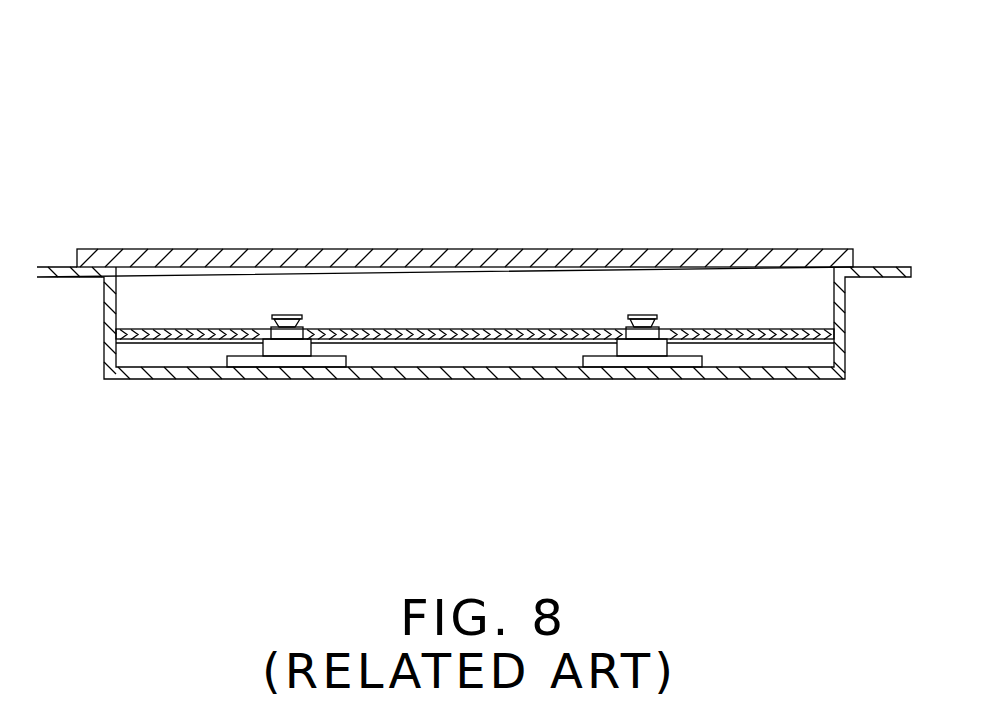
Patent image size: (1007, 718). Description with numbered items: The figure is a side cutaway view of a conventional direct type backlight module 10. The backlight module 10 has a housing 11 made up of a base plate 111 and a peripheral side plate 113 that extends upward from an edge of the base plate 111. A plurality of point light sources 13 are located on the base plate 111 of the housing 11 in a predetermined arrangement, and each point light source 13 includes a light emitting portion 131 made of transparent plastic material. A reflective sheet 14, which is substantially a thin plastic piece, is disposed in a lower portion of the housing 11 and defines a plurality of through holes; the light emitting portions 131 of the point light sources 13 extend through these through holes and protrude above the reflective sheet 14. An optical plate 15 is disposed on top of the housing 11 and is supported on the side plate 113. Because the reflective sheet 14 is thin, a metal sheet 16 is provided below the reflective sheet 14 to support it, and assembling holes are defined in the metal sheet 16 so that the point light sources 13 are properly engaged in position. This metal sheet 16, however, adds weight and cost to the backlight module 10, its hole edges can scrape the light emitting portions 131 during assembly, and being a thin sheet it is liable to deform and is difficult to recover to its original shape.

The direct type backlight module 10 is at (487, 48).
The housing 11 is at (488, 349).
The base plate 111 is at (810, 374).
The peripheral side plate 113 is at (841, 332).
The point light source 13 is at (534, 269).
The light emitting portion 131 is at (657, 328).
The reflective sheet 14 is at (353, 333).
The optical plate 15 is at (573, 258).
The metal sheet 16 is at (422, 338).